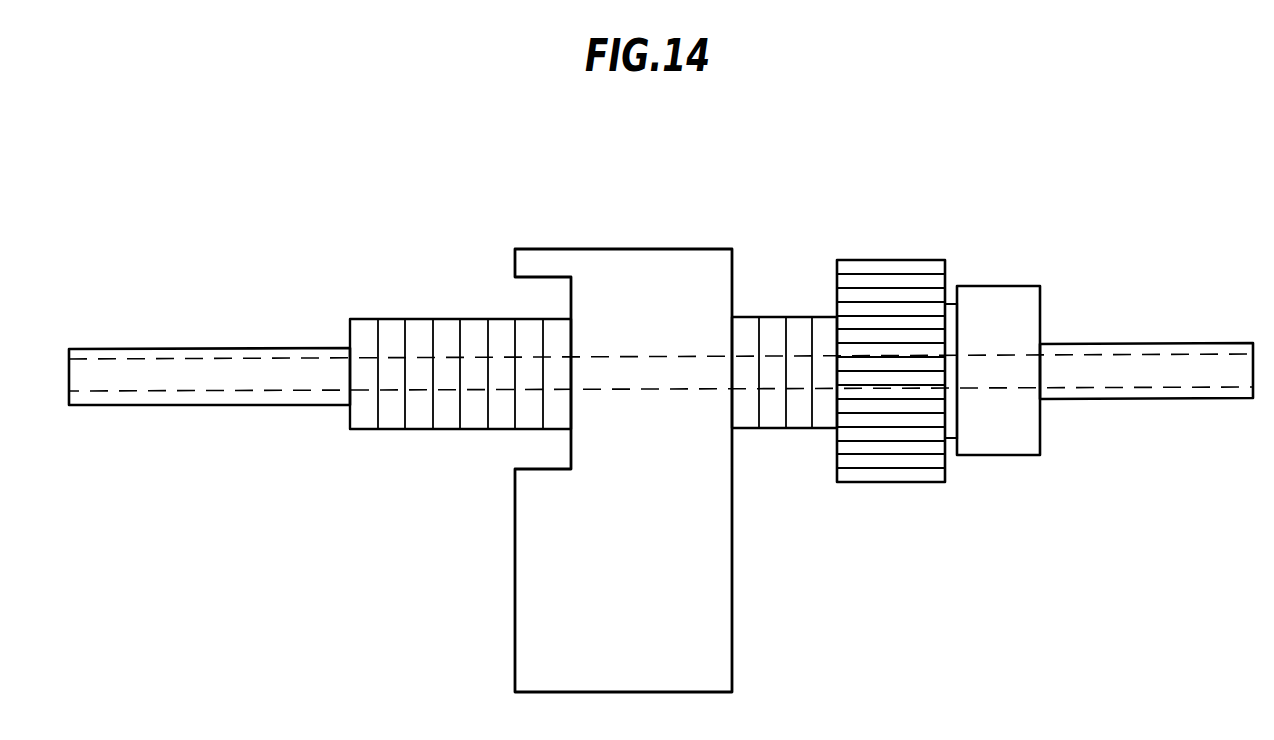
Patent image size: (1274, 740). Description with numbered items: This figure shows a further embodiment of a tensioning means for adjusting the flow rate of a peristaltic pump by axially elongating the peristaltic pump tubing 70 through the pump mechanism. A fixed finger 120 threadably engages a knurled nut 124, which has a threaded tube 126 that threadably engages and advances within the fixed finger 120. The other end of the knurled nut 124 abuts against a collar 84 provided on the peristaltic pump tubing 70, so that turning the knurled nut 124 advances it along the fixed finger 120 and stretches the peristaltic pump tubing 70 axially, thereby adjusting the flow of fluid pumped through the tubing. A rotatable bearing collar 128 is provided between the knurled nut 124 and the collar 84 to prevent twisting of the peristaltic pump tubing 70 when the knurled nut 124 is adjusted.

The peristaltic pump tubing 70 is at (1197, 343).
The collar 84 is at (1022, 288).
The fixed finger 120 is at (691, 248).
The knurled nut 124 is at (905, 258).
The threaded tube 126 is at (775, 315).
The rotatable bearing collar 128 is at (950, 303).